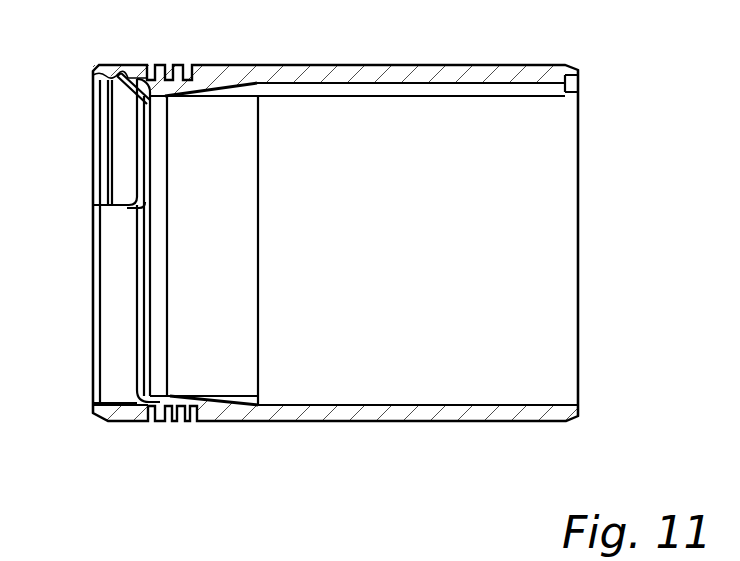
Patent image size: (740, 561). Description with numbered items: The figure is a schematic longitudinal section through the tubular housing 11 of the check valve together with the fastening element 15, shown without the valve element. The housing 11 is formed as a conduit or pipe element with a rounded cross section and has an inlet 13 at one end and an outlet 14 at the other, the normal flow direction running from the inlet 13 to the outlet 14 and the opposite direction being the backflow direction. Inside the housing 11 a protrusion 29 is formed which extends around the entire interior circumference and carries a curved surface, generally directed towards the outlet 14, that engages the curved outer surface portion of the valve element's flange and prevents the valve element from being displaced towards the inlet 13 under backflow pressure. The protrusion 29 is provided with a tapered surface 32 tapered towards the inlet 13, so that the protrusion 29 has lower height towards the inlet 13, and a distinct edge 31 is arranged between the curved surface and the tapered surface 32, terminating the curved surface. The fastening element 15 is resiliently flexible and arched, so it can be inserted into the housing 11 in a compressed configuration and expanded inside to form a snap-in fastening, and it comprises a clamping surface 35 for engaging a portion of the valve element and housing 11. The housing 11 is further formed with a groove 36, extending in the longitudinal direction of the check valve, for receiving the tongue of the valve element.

The housing 11 is at (314, 64).
The inlet 13 is at (582, 190).
The outlet 14 is at (93, 262).
The fastening element 15 is at (99, 160).
The protrusion 29 is at (164, 383).
The distinct edge 31 is at (150, 379).
The tapered surface 32 is at (201, 383).
The clamping surface 35 is at (141, 78).
The groove 36 is at (407, 88).